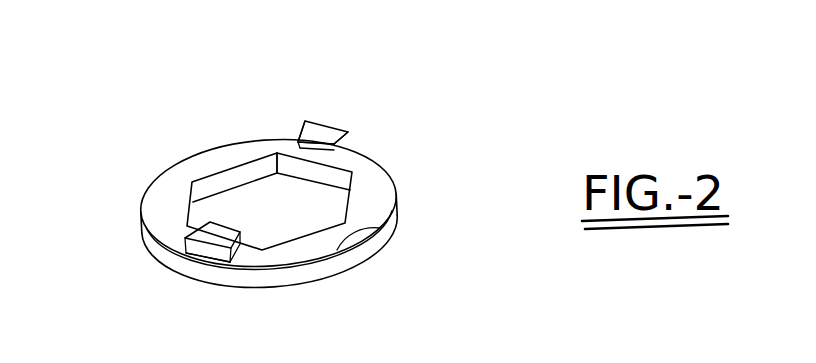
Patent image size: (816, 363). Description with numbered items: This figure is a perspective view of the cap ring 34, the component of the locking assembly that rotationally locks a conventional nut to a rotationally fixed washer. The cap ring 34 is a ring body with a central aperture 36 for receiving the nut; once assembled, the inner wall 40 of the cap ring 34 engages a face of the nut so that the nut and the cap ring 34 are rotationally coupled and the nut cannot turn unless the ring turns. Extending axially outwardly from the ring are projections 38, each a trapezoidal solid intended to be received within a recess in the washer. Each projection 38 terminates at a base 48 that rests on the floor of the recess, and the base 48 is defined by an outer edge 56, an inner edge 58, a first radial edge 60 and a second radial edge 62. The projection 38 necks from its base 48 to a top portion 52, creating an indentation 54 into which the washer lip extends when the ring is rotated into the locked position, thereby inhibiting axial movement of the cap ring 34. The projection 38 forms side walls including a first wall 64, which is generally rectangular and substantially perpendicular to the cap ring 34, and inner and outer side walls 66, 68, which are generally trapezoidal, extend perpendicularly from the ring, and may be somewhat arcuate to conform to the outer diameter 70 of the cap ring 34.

The cap ring 34 is at (366, 273).
The aperture 36 is at (292, 228).
The projection 38 is at (310, 104).
The inner wall 40 is at (213, 183).
The base 48 is at (328, 127).
The top portion 52 is at (335, 150).
The indentation 54 is at (303, 156).
The outer edge 56 is at (333, 133).
The inner edge 58 is at (300, 150).
The first radial edge 60 is at (303, 122).
The second radial edge 62 is at (332, 143).
The first wall 64 is at (239, 254).
The inner side wall 66 is at (299, 142).
The outer side wall 68 is at (208, 255).
The outer diameter 70 is at (380, 228).